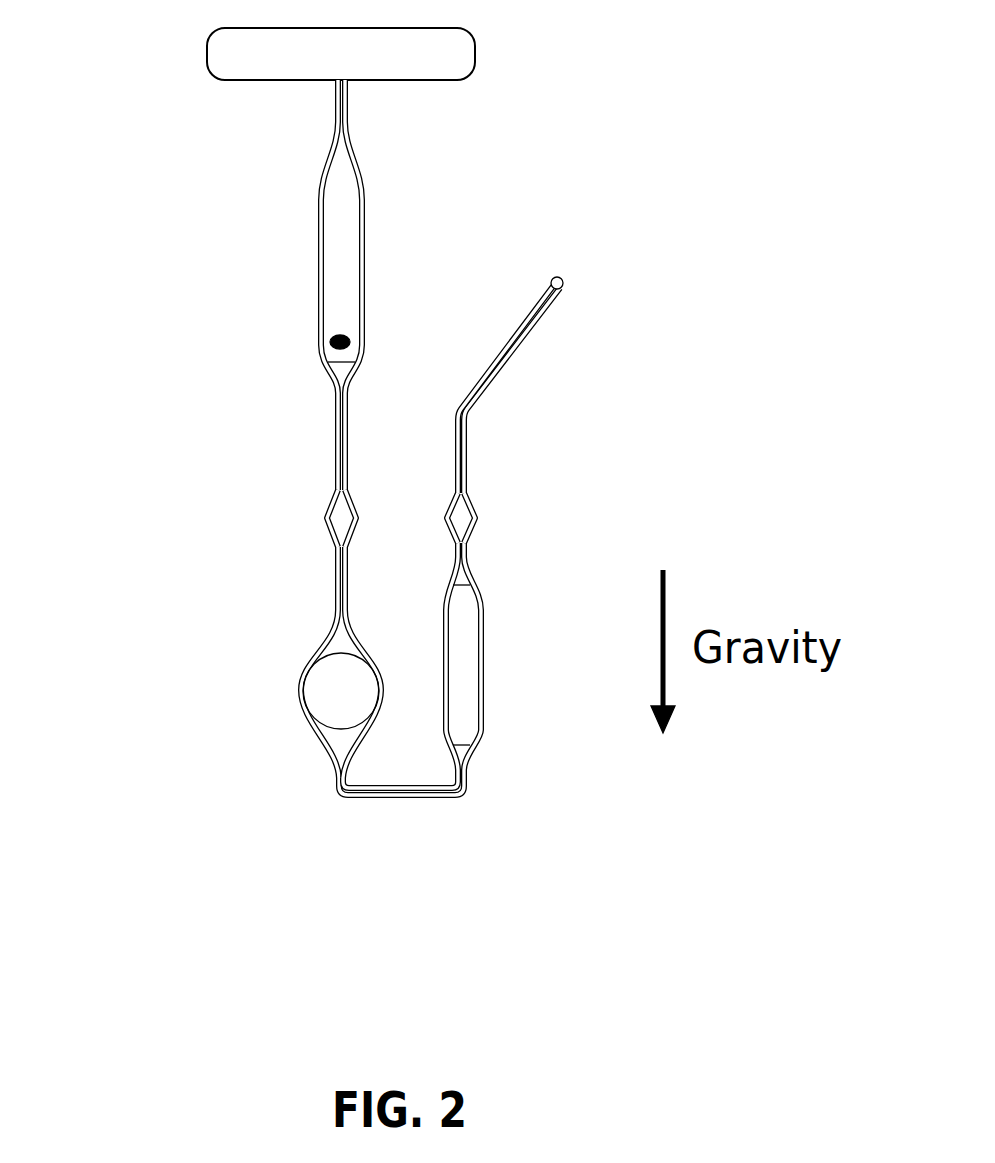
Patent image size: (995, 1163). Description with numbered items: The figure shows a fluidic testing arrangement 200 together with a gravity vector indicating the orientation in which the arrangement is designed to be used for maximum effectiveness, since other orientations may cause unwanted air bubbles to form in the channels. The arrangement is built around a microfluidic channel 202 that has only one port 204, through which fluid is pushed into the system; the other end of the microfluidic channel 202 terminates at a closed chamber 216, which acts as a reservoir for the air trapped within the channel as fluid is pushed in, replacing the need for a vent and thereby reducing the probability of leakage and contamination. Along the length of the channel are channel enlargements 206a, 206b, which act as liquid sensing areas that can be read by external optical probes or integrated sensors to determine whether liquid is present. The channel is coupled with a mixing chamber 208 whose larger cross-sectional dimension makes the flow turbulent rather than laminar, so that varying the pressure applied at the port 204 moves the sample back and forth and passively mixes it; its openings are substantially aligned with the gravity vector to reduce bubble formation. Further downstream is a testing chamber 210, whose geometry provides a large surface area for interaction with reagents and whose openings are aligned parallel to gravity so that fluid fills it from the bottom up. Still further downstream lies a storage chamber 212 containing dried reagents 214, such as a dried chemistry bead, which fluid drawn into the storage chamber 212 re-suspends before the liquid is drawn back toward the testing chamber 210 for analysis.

The fluidic testing arrangement 200 is at (102, 57).
The microfluidic channel 202 is at (500, 385).
The port 204 is at (563, 282).
The channel enlargement 206a is at (478, 525).
The channel enlargement 206b is at (326, 522).
The mixing chamber 208 is at (482, 658).
The testing chamber 210 is at (302, 710).
The storage chamber 212 is at (326, 255).
The dried reagents 214 is at (324, 342).
The closed chamber 216 is at (476, 48).